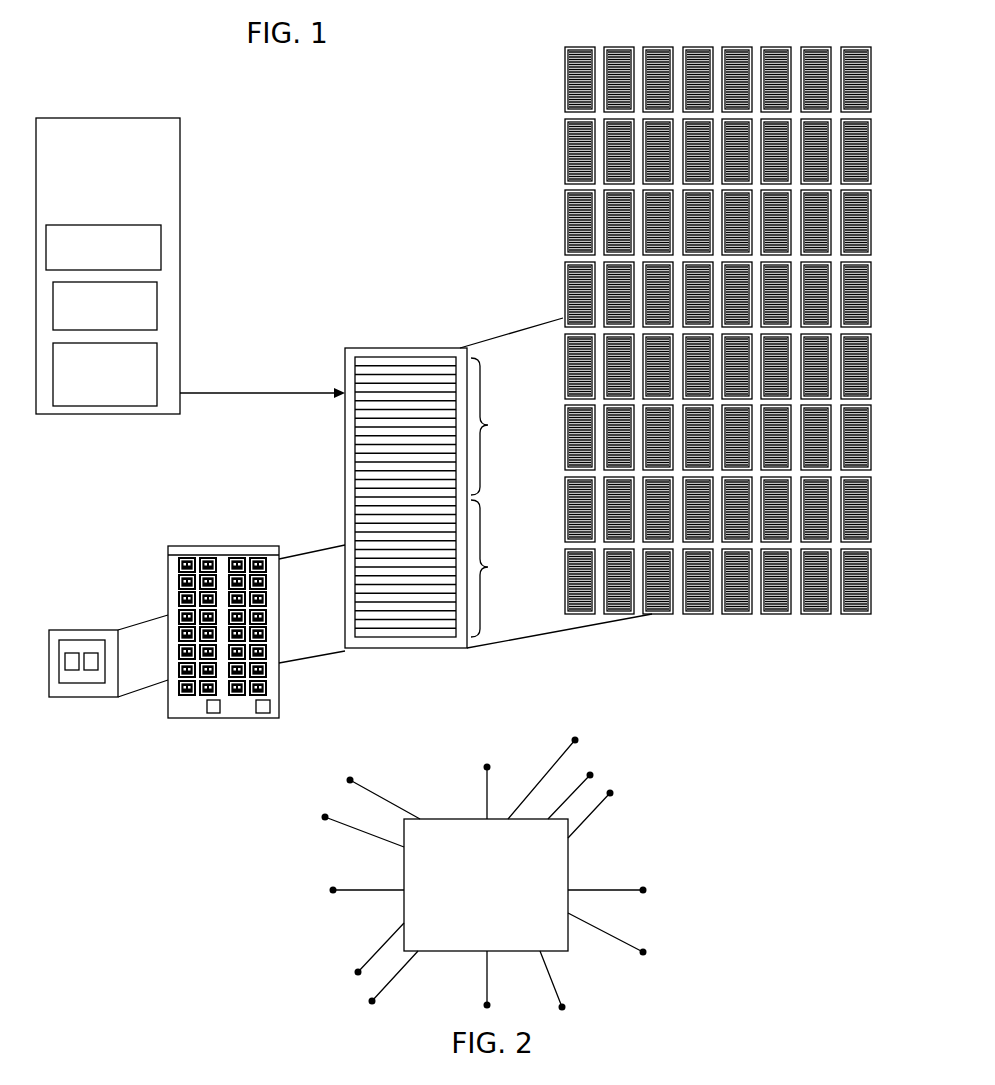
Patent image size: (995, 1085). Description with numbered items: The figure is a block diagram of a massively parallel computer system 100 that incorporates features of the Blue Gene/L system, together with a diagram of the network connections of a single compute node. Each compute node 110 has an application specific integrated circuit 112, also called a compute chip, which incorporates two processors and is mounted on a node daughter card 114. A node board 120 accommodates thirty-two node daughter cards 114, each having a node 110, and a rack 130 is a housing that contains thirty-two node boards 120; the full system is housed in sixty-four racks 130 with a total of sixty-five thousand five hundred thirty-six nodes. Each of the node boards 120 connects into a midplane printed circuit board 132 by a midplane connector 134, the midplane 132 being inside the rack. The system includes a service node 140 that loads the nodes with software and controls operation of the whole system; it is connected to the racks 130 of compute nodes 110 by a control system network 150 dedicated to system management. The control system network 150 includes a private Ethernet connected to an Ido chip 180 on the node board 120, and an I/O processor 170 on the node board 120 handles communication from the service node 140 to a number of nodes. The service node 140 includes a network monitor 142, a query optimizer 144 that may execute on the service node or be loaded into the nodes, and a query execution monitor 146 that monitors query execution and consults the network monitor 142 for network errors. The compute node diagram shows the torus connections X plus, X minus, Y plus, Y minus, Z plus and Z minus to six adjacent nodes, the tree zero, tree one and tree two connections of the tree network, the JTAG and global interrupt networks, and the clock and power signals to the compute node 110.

In FIG. 1, the massively parallel computer system 100 is at (252, 145).
In FIG. 1, the compute node 110 is at (63, 630).
In FIG. 2, the compute node 110 is at (491, 864).
In FIG. 1, the application specific integrated circuit (compute chip) 112 is at (60, 684).
In FIG. 1, the node daughter card 114 is at (92, 697).
In FIG. 1, the node board 120 is at (415, 620).
In FIG. 1, the rack 130 is at (500, 180).
In FIG. 1, the midplane printed circuit board 132 is at (516, 497).
In FIG. 1, the midplane connector 134 is at (168, 550).
In FIG. 1, the service node 140 is at (141, 266).
In FIG. 1, the network monitor 142 is at (161, 247).
In FIG. 1, the query optimizer 144 is at (157, 307).
In FIG. 1, the query execution monitor 146 is at (157, 374).
In FIG. 1, the control system network 150 is at (210, 392).
In FIG. 1, the I/O processor 170 is at (213, 715).
In FIG. 1, the Ido chip 180 is at (270, 715).